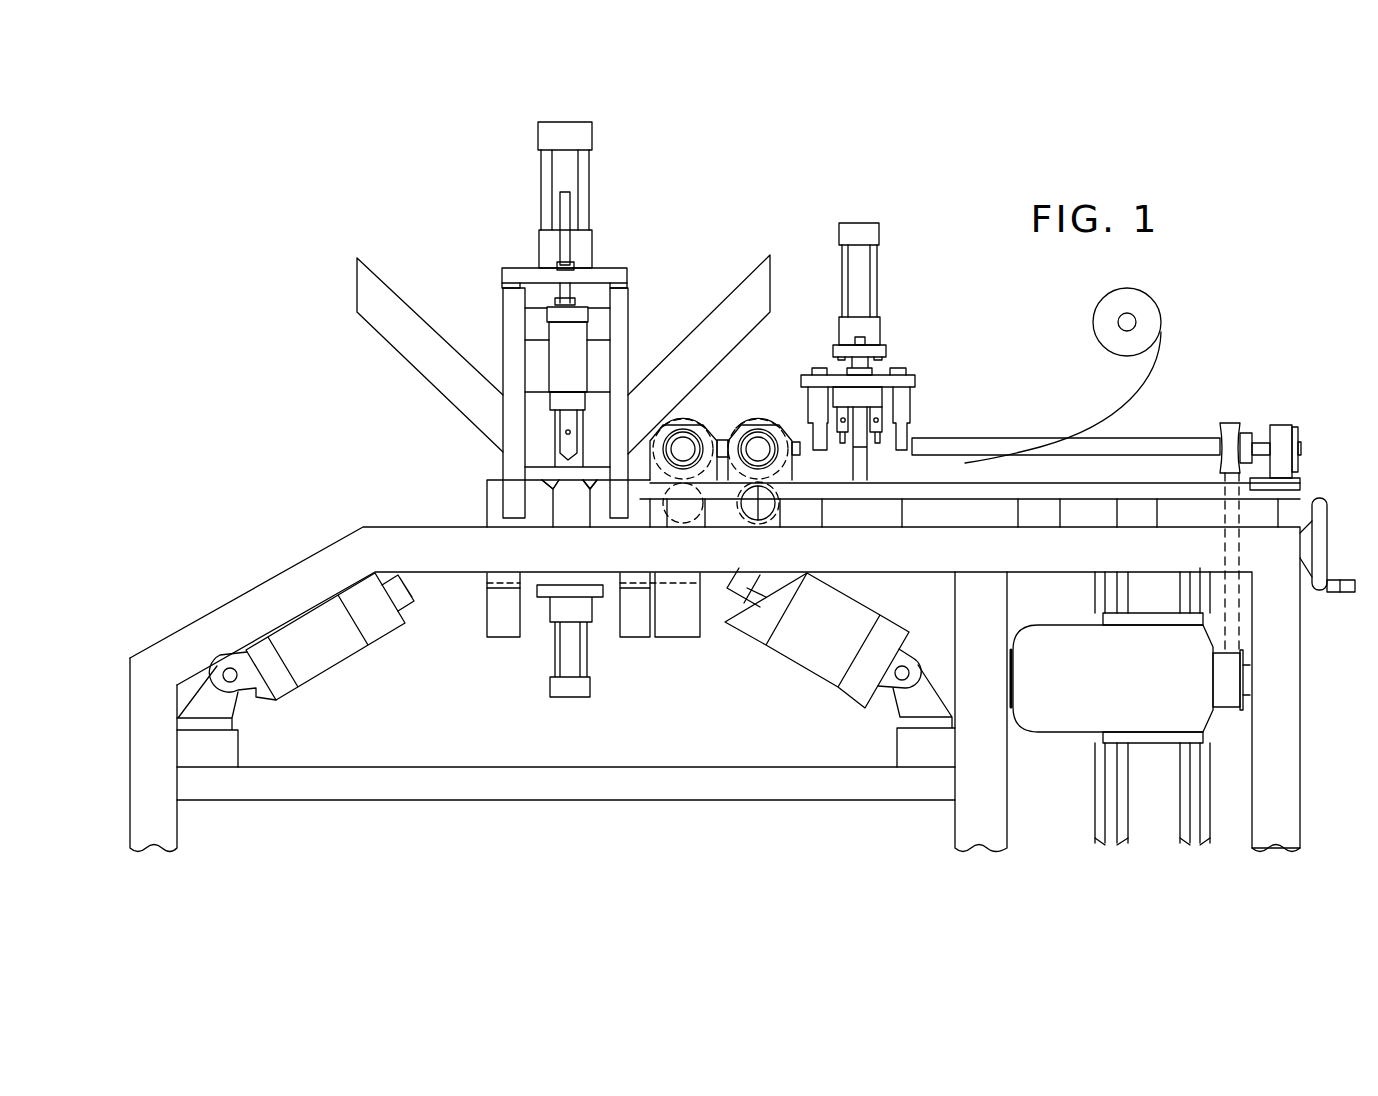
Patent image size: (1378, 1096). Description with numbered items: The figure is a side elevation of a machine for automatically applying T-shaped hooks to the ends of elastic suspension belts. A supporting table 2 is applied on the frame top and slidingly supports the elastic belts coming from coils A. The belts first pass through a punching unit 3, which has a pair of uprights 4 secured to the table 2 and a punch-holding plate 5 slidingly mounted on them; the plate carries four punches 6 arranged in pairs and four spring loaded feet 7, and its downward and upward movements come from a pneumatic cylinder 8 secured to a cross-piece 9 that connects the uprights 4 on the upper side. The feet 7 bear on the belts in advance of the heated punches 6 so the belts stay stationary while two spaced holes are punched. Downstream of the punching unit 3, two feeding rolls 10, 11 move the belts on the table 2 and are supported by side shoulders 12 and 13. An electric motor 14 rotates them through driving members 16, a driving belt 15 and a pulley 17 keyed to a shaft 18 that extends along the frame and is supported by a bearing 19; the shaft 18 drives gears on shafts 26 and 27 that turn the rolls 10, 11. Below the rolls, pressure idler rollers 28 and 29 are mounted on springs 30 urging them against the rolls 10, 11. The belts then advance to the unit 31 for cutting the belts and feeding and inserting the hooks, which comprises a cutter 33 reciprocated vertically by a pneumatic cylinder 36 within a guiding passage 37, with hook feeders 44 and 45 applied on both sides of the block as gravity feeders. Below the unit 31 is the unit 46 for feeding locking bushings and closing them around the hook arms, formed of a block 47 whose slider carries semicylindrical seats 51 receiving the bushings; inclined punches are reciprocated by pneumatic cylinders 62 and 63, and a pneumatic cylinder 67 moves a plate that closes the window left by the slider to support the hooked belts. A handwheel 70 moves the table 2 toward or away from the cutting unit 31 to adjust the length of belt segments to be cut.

The supporting table 2 is at (922, 488).
The punching unit 3 is at (869, 347).
The uprights 4 is at (867, 461).
The punch-holding plate 5 is at (915, 380).
The punches 6 is at (882, 416).
The spring loaded feet 7 is at (808, 403).
The pneumatic cylinder 8 is at (879, 234).
The cross-piece 9 is at (886, 352).
The feeding roll 10 is at (758, 424).
The feeding roll 11 is at (683, 425).
The side shoulder 12 is at (797, 455).
The side shoulder 13 is at (739, 472).
The electric motor 14 is at (1058, 733).
The driving belt 15 is at (1241, 638).
The driving member 16 is at (1246, 698).
The pulley 17 is at (1226, 423).
The shaft 18 is at (1051, 438).
The bearing 19 is at (1279, 425).
The shaft 26 is at (749, 466).
The shaft 27 is at (683, 446).
The pressure idler roller 28 is at (776, 512).
The pressure idler roller 29 is at (695, 510).
The springs 30 is at (759, 522).
The unit for cutting the elastic belts and for feeding and inserting the hooks 31 is at (551, 320).
The cutter 33 is at (560, 432).
The pneumatic cylinder 36 is at (592, 136).
The guiding passage 37 is at (563, 470).
The hook feeder 44 is at (741, 286).
The hook feeder 45 is at (421, 319).
The unit for feeding locking bushings and for closing them around the projecting arm 46 is at (555, 515).
The block 47 is at (487, 483).
The semicylindrical seats 51 is at (553, 490).
The pneumatic cylinder 62 is at (798, 650).
The pneumatic cylinder 63 is at (345, 652).
The pneumatic cylinder 67 is at (590, 689).
The handwheel 70 is at (1318, 591).
The coils A is at (1141, 293).